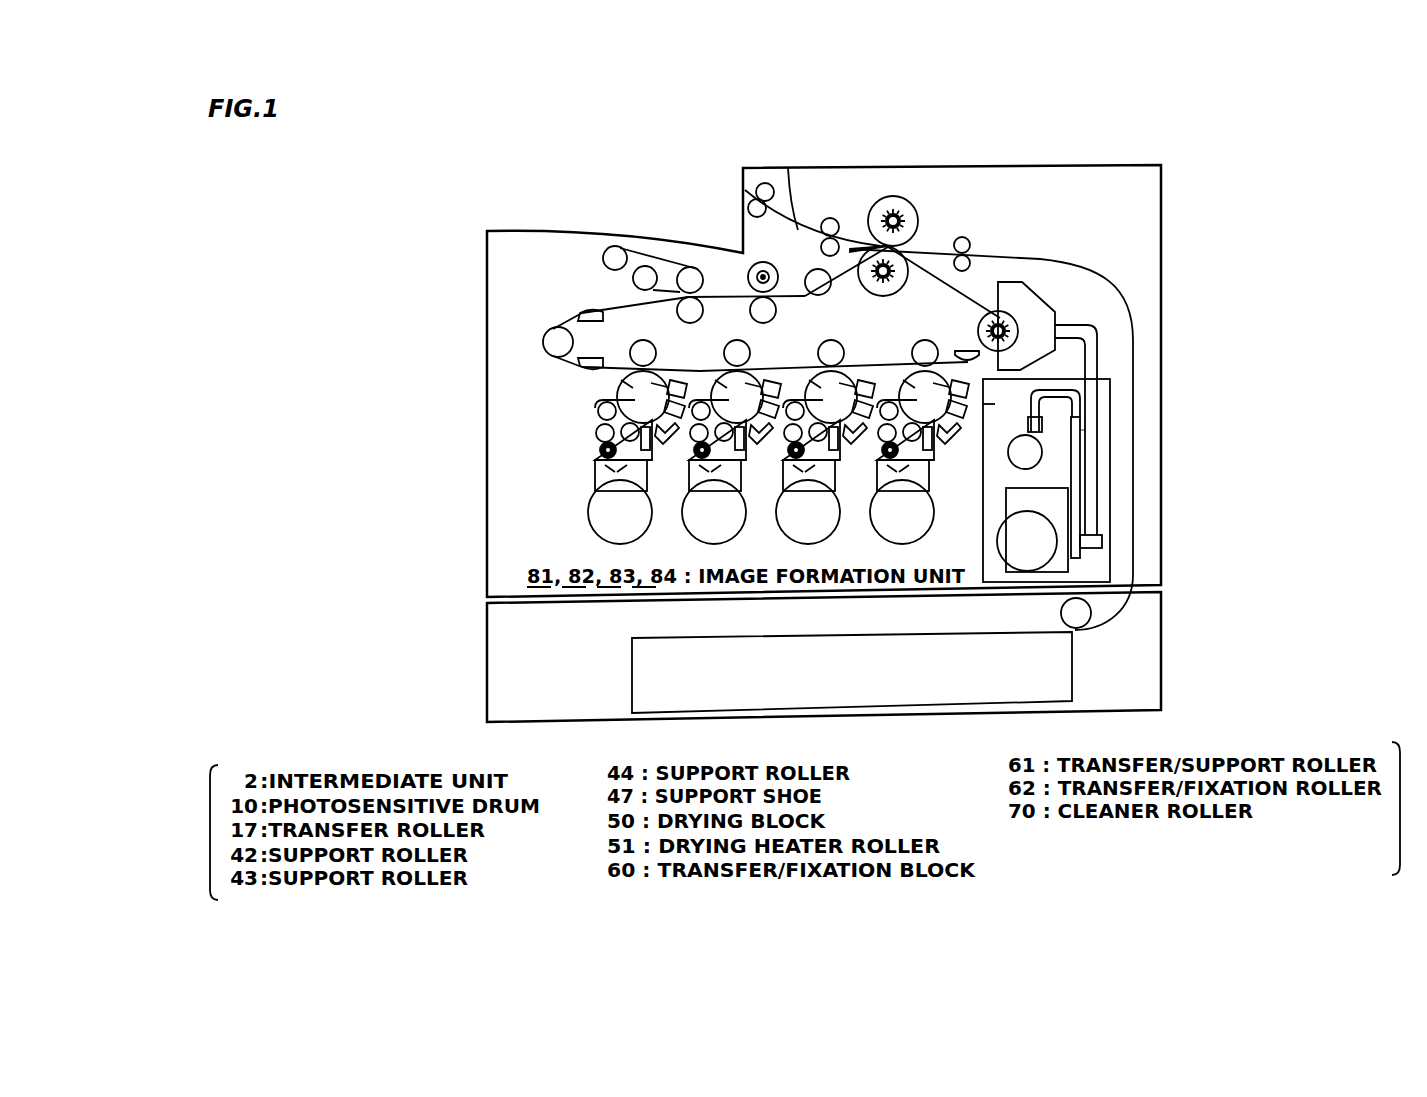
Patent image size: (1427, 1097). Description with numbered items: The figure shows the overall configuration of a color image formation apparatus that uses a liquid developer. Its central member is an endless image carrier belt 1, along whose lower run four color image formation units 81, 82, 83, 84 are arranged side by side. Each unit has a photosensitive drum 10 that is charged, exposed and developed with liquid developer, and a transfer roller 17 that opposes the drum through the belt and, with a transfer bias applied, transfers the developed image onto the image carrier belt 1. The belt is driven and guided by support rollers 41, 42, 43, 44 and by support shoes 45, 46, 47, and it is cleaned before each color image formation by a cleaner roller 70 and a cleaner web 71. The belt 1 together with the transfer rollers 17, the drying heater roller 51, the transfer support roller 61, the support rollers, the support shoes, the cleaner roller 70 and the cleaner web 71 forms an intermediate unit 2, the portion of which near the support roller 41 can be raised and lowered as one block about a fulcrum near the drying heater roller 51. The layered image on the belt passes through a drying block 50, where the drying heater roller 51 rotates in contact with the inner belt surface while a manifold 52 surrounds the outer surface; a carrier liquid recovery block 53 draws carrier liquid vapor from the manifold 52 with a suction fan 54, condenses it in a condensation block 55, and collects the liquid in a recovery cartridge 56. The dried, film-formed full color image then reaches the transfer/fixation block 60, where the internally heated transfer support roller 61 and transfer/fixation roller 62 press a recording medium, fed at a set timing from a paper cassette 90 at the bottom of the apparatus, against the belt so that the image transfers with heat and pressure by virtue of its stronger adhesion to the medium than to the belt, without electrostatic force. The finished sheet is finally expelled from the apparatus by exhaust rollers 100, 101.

The image carrier belt 1 is at (522, 314).
The intermediate unit 2 is at (842, 321).
The photosensitive drum 10 is at (663, 374).
The transfer roller 17 is at (651, 350).
The support roller 41 is at (548, 345).
The support roller 42 is at (700, 316).
The support roller 43 is at (771, 316).
The support roller 44 is at (811, 274).
The support shoe 45 is at (582, 312).
The support shoe 46 is at (574, 366).
The support shoe 47 is at (965, 351).
The drying block 50 is at (1039, 366).
The drying heater roller 51 is at (990, 321).
The manifold 52 is at (1076, 307).
The carrier liquid recovery block 53 is at (1184, 439).
The suction fan 54 is at (1025, 452).
The condensation block 55 is at (1103, 452).
The recovery cartridge 56 is at (1035, 543).
The transfer/fixation block 60 is at (913, 242).
The transfer support roller 61 is at (896, 284).
The transfer/fixation roller 62 is at (918, 236).
The cleaner roller 70 is at (763, 262).
The cleaner web 71 is at (673, 266).
The image formation unit 81 is at (599, 544).
The image formation unit 82 is at (693, 544).
The image formation unit 83 is at (785, 544).
The image formation unit 84 is at (878, 544).
The paper cassette 90 is at (768, 681).
The exhaust roller 100 is at (832, 218).
The exhaust roller 101 is at (766, 183).